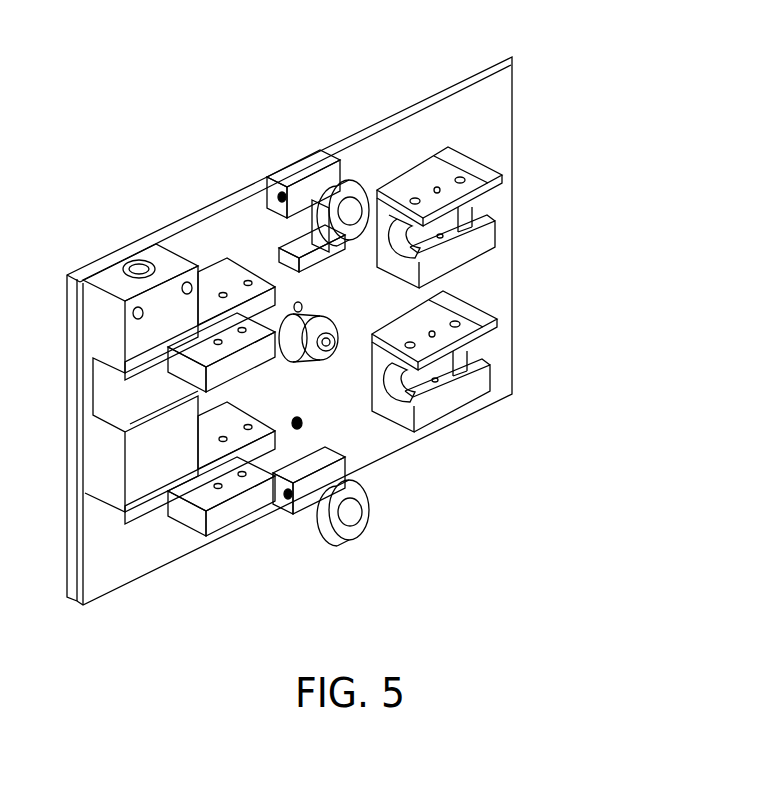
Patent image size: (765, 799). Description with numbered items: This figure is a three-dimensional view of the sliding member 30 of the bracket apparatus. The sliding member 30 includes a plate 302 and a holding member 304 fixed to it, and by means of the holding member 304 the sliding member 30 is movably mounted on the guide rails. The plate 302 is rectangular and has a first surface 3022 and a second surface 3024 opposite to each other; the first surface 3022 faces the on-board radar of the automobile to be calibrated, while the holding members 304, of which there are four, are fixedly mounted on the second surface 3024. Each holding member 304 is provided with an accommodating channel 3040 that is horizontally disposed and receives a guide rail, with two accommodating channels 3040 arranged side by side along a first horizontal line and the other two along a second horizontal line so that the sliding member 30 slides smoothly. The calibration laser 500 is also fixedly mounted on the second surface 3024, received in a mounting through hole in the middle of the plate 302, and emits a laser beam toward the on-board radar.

The sliding member 30 is at (611, 62).
The plate 302 is at (502, 98).
The first surface 3022 is at (336, 136).
The second surface 3024 is at (390, 147).
The holding member 304 is at (491, 289).
The accommodating channel 3040 is at (452, 226).
The calibration laser 500 is at (313, 360).